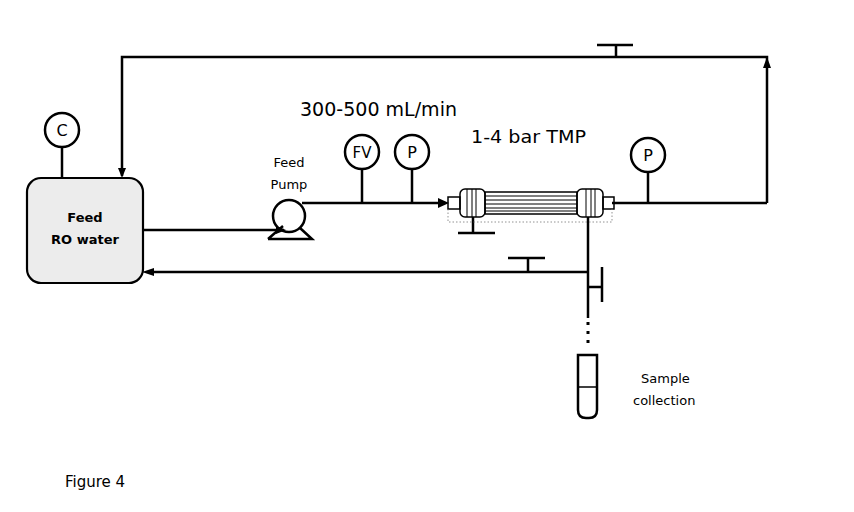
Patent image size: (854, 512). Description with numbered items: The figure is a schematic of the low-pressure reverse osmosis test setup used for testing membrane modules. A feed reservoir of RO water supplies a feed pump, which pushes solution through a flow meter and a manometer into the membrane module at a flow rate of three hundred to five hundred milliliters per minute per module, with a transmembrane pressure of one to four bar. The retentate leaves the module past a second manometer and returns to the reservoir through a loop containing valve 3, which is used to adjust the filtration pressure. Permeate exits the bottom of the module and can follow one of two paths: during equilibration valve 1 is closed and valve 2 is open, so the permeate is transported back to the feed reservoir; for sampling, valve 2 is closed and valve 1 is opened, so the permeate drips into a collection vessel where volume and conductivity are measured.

The valve 1 is at (608, 284).
The valve 2 is at (526, 254).
The valve 3 is at (615, 40).